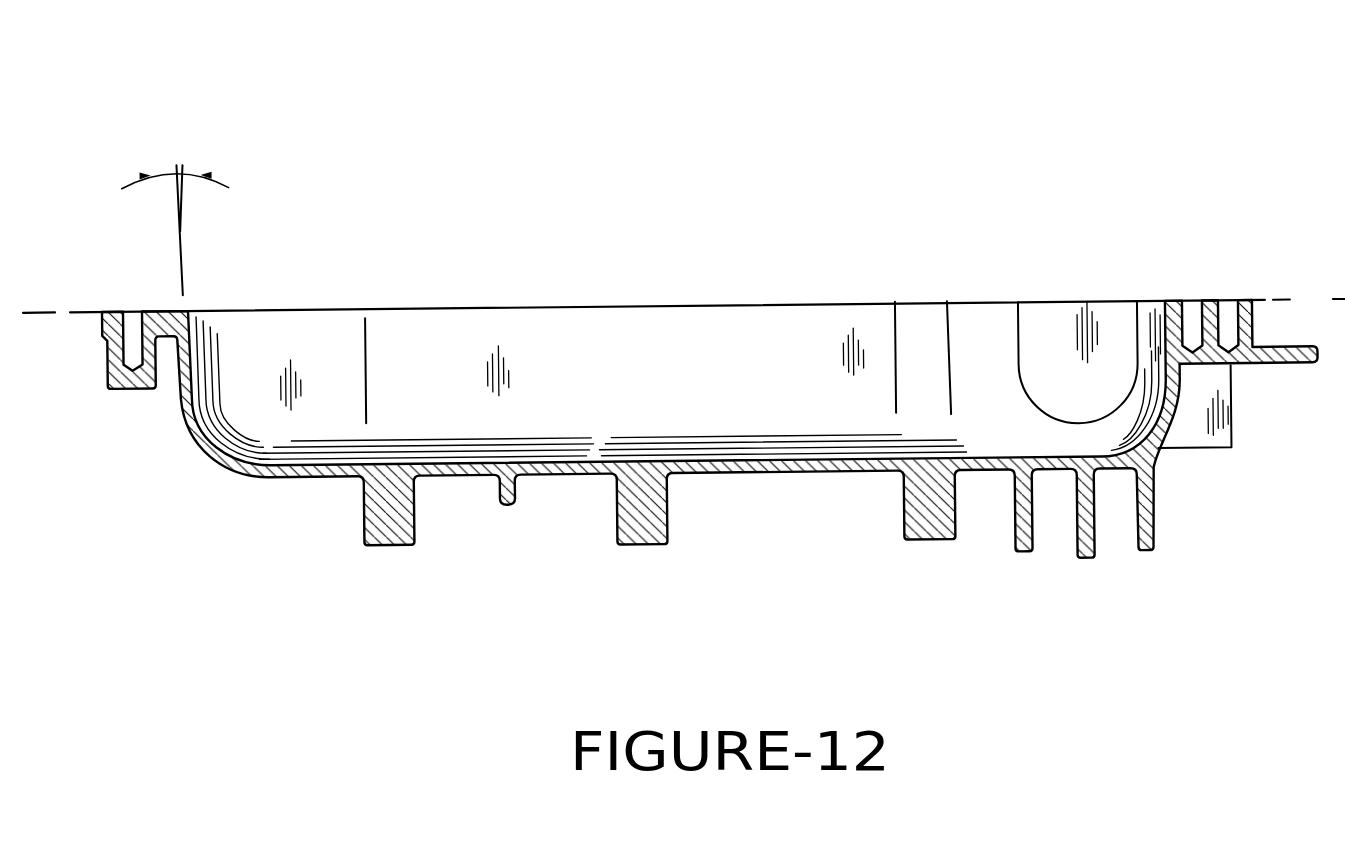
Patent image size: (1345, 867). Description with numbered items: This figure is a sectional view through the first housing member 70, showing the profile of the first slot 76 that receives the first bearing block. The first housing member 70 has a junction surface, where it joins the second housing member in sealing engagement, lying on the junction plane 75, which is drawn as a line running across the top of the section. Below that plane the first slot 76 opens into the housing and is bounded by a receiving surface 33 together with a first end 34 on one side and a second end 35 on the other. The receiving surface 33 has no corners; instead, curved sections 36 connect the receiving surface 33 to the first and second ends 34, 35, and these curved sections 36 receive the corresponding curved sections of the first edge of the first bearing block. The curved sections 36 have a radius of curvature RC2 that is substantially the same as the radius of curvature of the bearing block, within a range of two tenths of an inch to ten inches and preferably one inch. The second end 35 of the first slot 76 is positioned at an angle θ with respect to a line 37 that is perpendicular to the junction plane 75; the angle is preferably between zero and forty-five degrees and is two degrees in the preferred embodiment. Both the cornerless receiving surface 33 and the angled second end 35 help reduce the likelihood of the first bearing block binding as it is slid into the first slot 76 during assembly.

The first housing member 70 is at (502, 132).
The first slot 76 is at (747, 347).
The junction plane 75 is at (1307, 308).
The first end 34 is at (1167, 334).
The receiving surface 33 is at (782, 467).
The curved sections 36 is at (232, 455).
The second end 35 is at (188, 360).
The line 37 is at (183, 218).
The radius of curvature RC2 is at (214, 437).